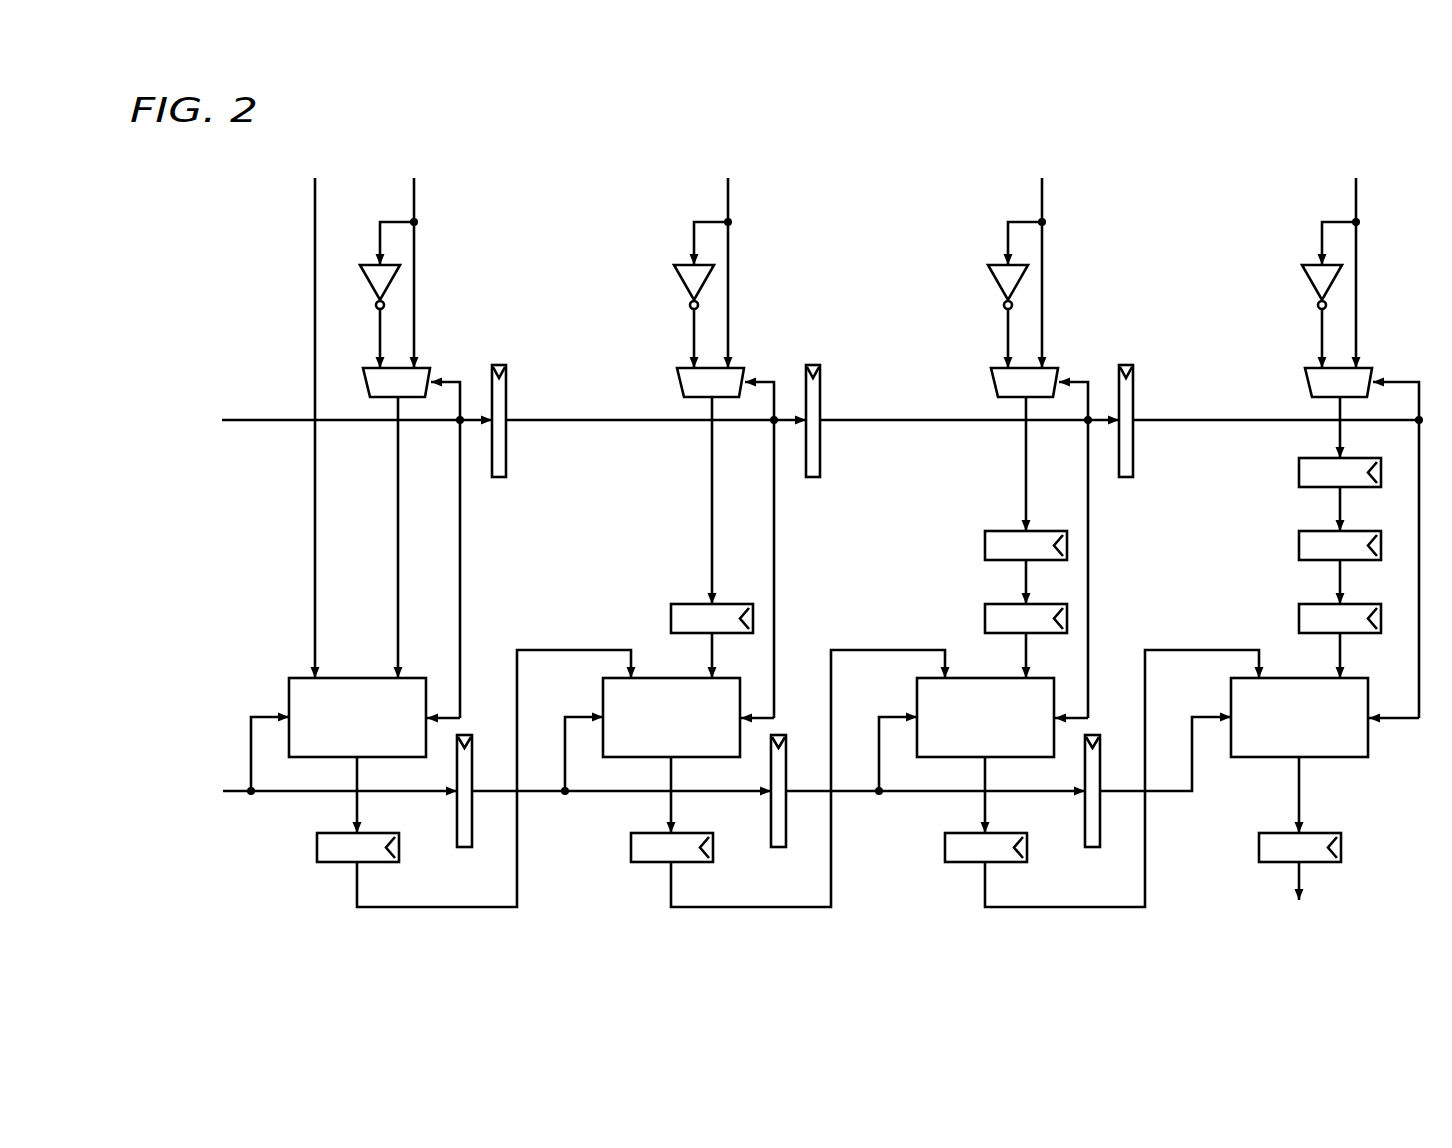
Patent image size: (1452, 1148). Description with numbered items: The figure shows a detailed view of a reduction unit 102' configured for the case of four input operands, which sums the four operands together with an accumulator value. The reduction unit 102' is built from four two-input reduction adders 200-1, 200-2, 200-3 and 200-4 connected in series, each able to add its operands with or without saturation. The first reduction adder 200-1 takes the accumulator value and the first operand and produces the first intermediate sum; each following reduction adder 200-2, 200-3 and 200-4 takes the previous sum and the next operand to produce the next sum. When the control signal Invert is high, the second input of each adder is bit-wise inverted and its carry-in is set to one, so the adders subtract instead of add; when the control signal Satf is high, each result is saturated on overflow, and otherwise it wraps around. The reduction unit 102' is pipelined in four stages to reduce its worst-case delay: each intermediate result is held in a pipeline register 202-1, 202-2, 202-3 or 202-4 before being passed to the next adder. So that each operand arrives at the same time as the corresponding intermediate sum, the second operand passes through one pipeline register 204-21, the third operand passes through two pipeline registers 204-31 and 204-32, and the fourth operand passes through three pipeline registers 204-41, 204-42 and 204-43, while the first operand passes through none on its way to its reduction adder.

The reduction unit 102' is at (794, 542).
The reduction adder 200-1 is at (289, 698).
The reduction adder 200-2 is at (603, 698).
The reduction adder 200-3 is at (917, 698).
The reduction adder 200-4 is at (1231, 698).
The pipeline register 202-1 is at (317, 850).
The pipeline register 202-2 is at (631, 850).
The pipeline register 202-3 is at (945, 850).
The pipeline register 202-4 is at (1259, 850).
The pipeline register 204-21 is at (671, 619).
The pipeline register 204-31 is at (985, 546).
The pipeline register 204-32 is at (985, 619).
The pipeline register 204-41 is at (1299, 473).
The pipeline register 204-42 is at (1299, 546).
The pipeline register 204-43 is at (1299, 619).